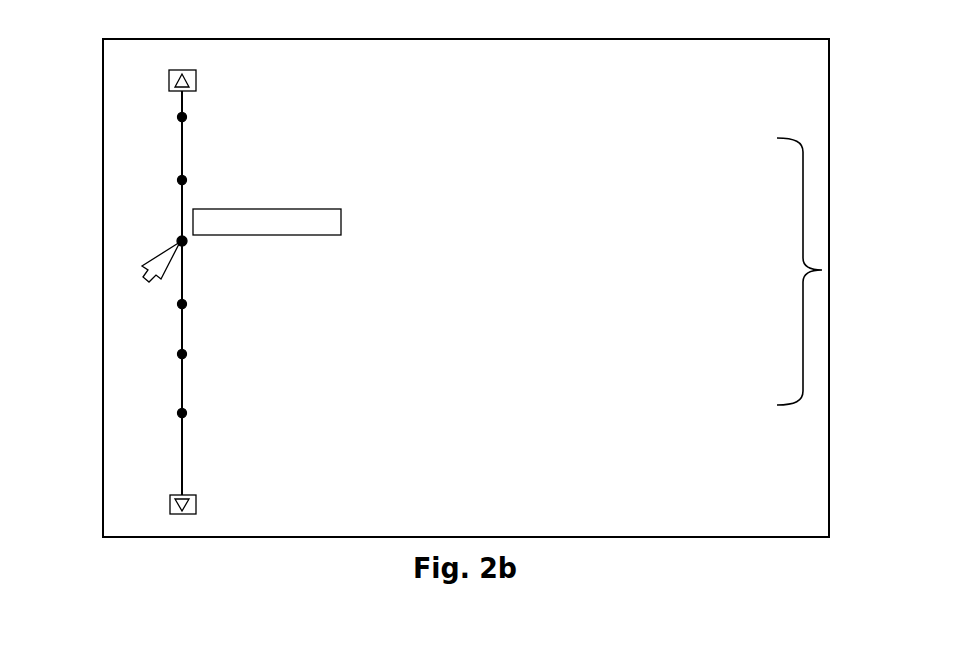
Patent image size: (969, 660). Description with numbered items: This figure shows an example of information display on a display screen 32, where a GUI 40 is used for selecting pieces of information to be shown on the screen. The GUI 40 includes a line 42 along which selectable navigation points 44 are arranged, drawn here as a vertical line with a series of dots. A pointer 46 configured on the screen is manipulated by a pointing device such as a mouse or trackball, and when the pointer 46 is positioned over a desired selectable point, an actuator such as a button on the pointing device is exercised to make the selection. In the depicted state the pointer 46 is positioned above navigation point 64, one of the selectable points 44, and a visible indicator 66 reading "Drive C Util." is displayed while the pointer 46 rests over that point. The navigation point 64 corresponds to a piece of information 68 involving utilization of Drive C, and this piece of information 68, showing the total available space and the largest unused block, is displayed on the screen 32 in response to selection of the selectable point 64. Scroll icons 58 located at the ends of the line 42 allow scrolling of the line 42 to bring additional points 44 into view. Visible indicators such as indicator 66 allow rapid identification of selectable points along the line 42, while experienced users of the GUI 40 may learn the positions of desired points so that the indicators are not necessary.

The display screen 32 is at (110, 79).
The GUI 40 is at (296, 462).
The line 42 is at (182, 460).
The selectable navigation points 44 is at (182, 354).
The pointer 46 is at (163, 262).
The scroll icons 58 is at (196, 80).
The navigation point 64 is at (182, 241).
The visible indicator 66 is at (258, 212).
The piece of information 68 is at (604, 271).